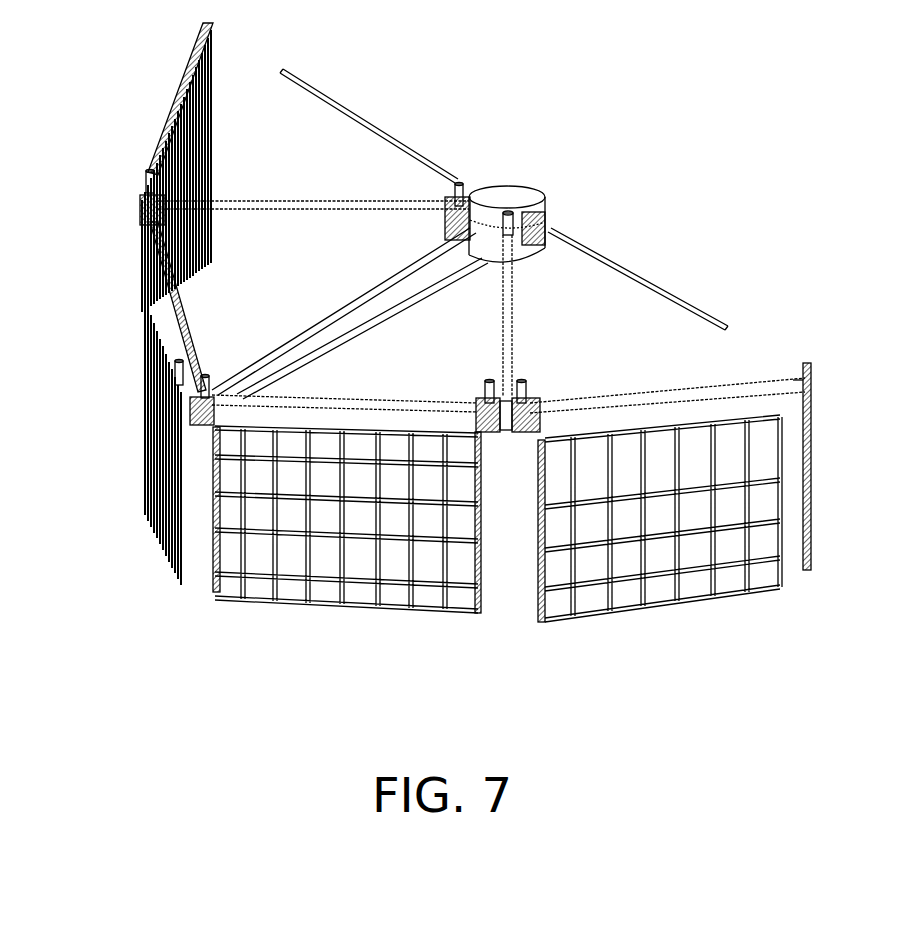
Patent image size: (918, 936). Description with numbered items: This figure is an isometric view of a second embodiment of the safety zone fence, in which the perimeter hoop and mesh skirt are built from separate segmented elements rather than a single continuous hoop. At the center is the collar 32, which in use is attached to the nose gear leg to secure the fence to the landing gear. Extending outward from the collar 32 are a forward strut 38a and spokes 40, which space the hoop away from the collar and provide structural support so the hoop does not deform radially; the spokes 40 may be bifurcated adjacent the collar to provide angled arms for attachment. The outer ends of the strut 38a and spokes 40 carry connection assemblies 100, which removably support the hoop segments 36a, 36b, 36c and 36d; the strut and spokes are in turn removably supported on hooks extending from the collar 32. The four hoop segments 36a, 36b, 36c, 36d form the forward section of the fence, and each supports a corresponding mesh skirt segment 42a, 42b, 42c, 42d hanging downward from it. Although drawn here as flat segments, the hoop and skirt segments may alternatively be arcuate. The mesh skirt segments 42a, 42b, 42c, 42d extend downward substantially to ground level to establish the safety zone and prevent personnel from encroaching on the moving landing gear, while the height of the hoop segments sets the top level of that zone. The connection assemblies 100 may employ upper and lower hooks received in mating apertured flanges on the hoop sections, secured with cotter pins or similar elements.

The collar 32 is at (540, 200).
The hoop segment 36a is at (275, 412).
The hoop segment 36b is at (187, 310).
The hoop segment 36c is at (692, 390).
The hoop segment 36d is at (183, 103).
The forward strut 38a is at (364, 303).
The spoke 40 is at (287, 207).
The mesh skirt segment 42a is at (325, 580).
The mesh skirt segment 42b is at (157, 520).
The mesh skirt segment 42c is at (700, 603).
The mesh skirt segment 42d is at (207, 238).
The connection assembly 100 is at (458, 185).